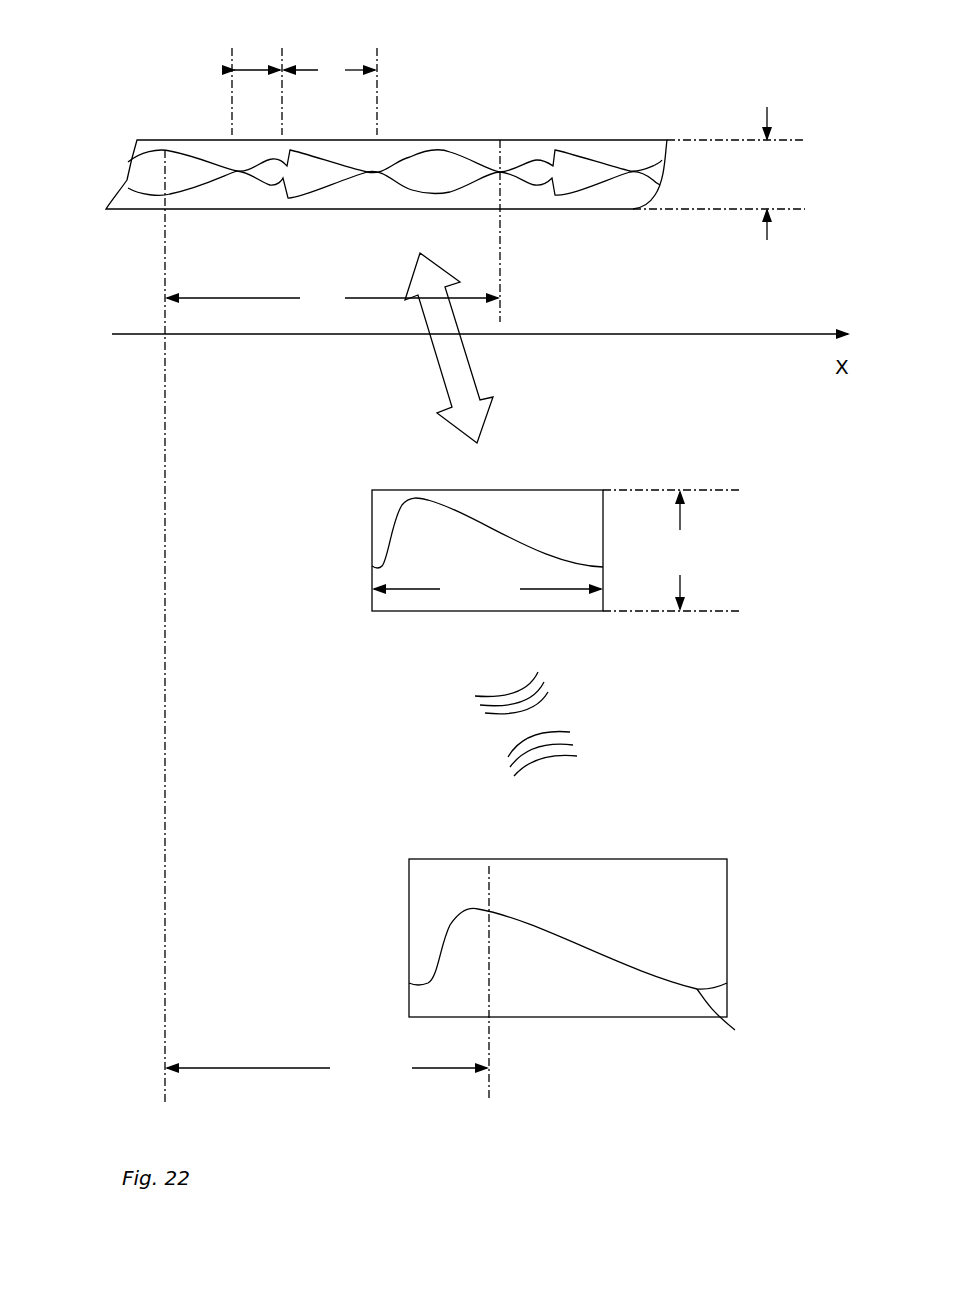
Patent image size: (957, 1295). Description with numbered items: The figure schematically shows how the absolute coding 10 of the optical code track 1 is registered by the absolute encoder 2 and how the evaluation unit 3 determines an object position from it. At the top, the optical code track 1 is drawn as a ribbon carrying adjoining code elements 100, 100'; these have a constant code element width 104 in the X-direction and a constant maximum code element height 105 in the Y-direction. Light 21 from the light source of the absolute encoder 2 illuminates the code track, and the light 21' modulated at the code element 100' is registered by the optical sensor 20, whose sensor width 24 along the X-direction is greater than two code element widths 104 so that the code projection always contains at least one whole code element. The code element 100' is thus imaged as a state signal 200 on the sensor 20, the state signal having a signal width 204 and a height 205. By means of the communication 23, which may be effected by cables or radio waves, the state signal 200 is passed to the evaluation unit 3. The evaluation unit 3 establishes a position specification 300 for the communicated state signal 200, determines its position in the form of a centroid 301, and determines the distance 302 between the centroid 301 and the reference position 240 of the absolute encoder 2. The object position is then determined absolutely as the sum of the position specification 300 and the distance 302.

The optical code track 1 is at (617, 72).
The absolute coding 10 is at (356, 121).
The code element 100 is at (356, 121).
The code element 100' is at (398, 85).
The code element width 104 is at (303, 74).
The maximum code element height 105 is at (719, 173).
The sensor width 24 is at (333, 231).
The reference position 240 is at (165, 697).
The light 21 is at (385, 348).
The modulated light 21' is at (449, 348).
The absolute encoder 2 is at (617, 478).
The optical sensor 20 is at (487, 550).
The signal width 204 is at (487, 589).
The sensor window height 205 is at (671, 550).
The state signal 200 is at (372, 577).
The communication 23 is at (487, 743).
The evaluation unit 3 is at (758, 855).
The position specification 300 is at (735, 1022).
The centroid 301 is at (491, 1035).
The distance 302 is at (327, 1069).